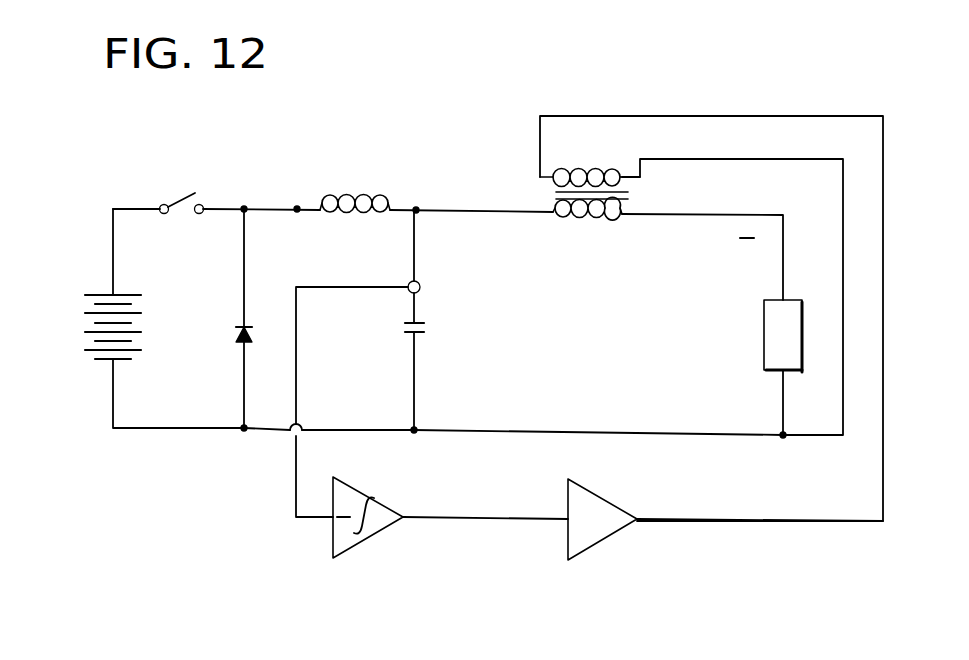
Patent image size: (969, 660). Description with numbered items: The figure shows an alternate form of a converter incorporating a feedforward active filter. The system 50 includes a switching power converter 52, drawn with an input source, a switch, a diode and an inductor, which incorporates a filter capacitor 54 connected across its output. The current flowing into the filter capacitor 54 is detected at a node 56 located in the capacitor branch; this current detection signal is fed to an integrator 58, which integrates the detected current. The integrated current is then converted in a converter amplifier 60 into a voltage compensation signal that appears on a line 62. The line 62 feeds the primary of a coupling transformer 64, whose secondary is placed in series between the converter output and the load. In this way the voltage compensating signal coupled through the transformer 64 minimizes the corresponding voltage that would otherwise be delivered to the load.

The system 50 is at (688, 93).
The switching power converter 52 is at (257, 153).
The filter capacitor 54 is at (414, 336).
The node 56 is at (420, 291).
The integrator 58 is at (362, 492).
The converter amplifier 60 is at (608, 498).
The line 62 is at (813, 521).
The coupling transformer 64 is at (594, 170).